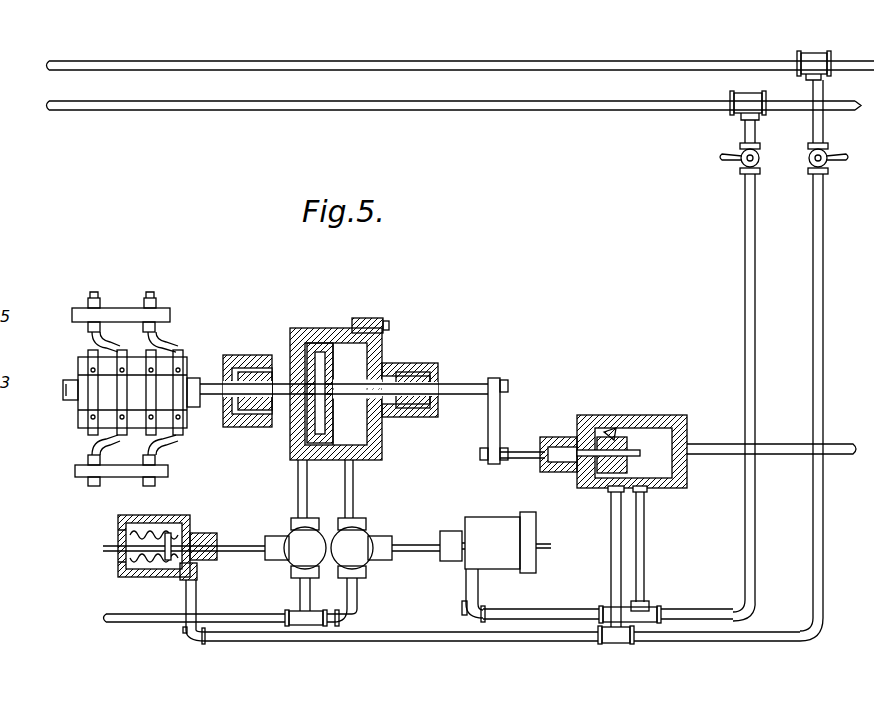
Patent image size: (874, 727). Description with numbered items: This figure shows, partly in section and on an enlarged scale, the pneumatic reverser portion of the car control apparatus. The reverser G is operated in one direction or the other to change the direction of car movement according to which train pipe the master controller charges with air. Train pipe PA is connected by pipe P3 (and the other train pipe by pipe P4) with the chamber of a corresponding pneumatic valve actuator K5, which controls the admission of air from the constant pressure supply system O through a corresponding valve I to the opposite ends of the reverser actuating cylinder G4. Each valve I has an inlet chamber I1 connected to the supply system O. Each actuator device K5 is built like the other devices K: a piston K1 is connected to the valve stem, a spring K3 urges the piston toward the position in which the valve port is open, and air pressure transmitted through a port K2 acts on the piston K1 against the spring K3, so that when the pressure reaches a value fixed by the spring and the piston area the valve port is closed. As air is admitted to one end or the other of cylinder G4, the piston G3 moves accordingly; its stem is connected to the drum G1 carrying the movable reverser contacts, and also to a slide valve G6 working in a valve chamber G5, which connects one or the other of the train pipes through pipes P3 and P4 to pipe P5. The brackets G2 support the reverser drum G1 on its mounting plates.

The train pipe PA is at (625, 58).
The pipe P3 is at (845, 350).
The pipe P4 is at (745, 347).
The pipe P5 is at (728, 456).
The reverser G is at (372, 420).
The drum G1 is at (90, 398).
The motor mounting brackets G2 is at (188, 450).
The piston G3 is at (338, 330).
The reverser actuating cylinder G4 is at (345, 328).
The valve chamber G5 is at (628, 418).
The slide valve G6 is at (592, 488).
The valve I is at (374, 520).
The inlet chamber I1 is at (325, 572).
The pneumatic valve actuator K5 is at (150, 520).
The piston K1 is at (192, 524).
The port K2 is at (200, 574).
The spring K3 is at (138, 575).
The constant air pressure supply system O is at (150, 625).